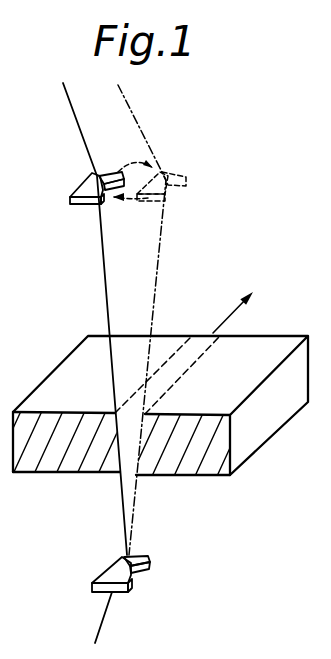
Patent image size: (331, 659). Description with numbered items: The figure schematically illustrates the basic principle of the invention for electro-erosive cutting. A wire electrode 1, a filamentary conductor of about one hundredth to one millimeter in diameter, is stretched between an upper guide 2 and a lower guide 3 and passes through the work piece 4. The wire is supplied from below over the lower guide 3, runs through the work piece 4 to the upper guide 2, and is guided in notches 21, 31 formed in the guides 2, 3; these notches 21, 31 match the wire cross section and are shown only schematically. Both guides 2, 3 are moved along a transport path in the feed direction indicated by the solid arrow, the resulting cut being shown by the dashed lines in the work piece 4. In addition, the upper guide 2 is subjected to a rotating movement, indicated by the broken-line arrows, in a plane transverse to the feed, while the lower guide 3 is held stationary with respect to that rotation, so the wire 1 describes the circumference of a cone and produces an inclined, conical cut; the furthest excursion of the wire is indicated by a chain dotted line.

The wire electrode 1 is at (105, 302).
The upper guide 2 is at (83, 191).
The notch 21 is at (105, 176).
The lower guide 3 is at (123, 580).
The notch 31 is at (137, 580).
The work piece 4 is at (262, 337).